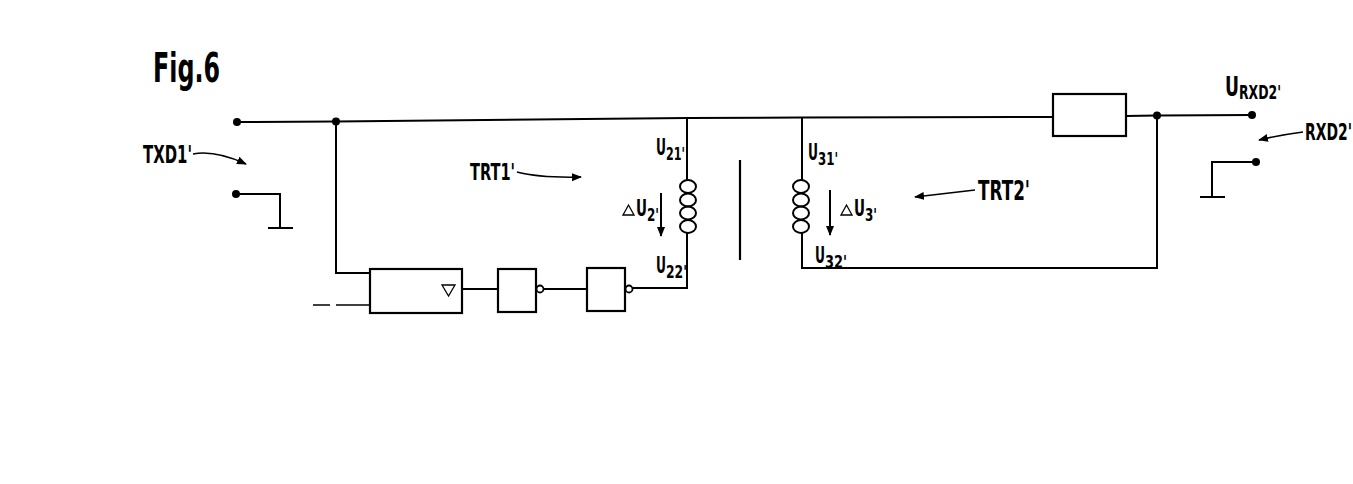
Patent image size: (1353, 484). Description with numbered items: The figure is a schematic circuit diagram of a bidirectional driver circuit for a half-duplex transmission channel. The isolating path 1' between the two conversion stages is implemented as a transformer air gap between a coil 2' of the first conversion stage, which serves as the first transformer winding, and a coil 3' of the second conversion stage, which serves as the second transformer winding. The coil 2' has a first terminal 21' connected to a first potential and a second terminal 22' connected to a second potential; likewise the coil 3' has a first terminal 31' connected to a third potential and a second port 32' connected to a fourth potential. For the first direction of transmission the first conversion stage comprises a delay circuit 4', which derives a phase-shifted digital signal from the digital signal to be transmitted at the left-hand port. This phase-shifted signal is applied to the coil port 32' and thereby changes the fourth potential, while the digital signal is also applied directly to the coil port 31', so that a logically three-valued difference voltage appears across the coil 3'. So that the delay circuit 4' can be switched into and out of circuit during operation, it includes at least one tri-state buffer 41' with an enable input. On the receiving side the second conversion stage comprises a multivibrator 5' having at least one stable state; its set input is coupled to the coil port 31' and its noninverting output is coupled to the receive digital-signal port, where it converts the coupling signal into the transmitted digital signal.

The transformer 1' is at (750, 174).
The coil 2' is at (661, 186).
The coil 3' is at (833, 185).
The delay circuit 4' is at (465, 329).
The multivibrator 5' is at (1101, 92).
The first terminal 21' is at (707, 150).
The second terminal 22' is at (707, 273).
The first terminal 31' is at (782, 150).
The second port 32' is at (786, 273).
The tri-state buffer 41' is at (397, 321).